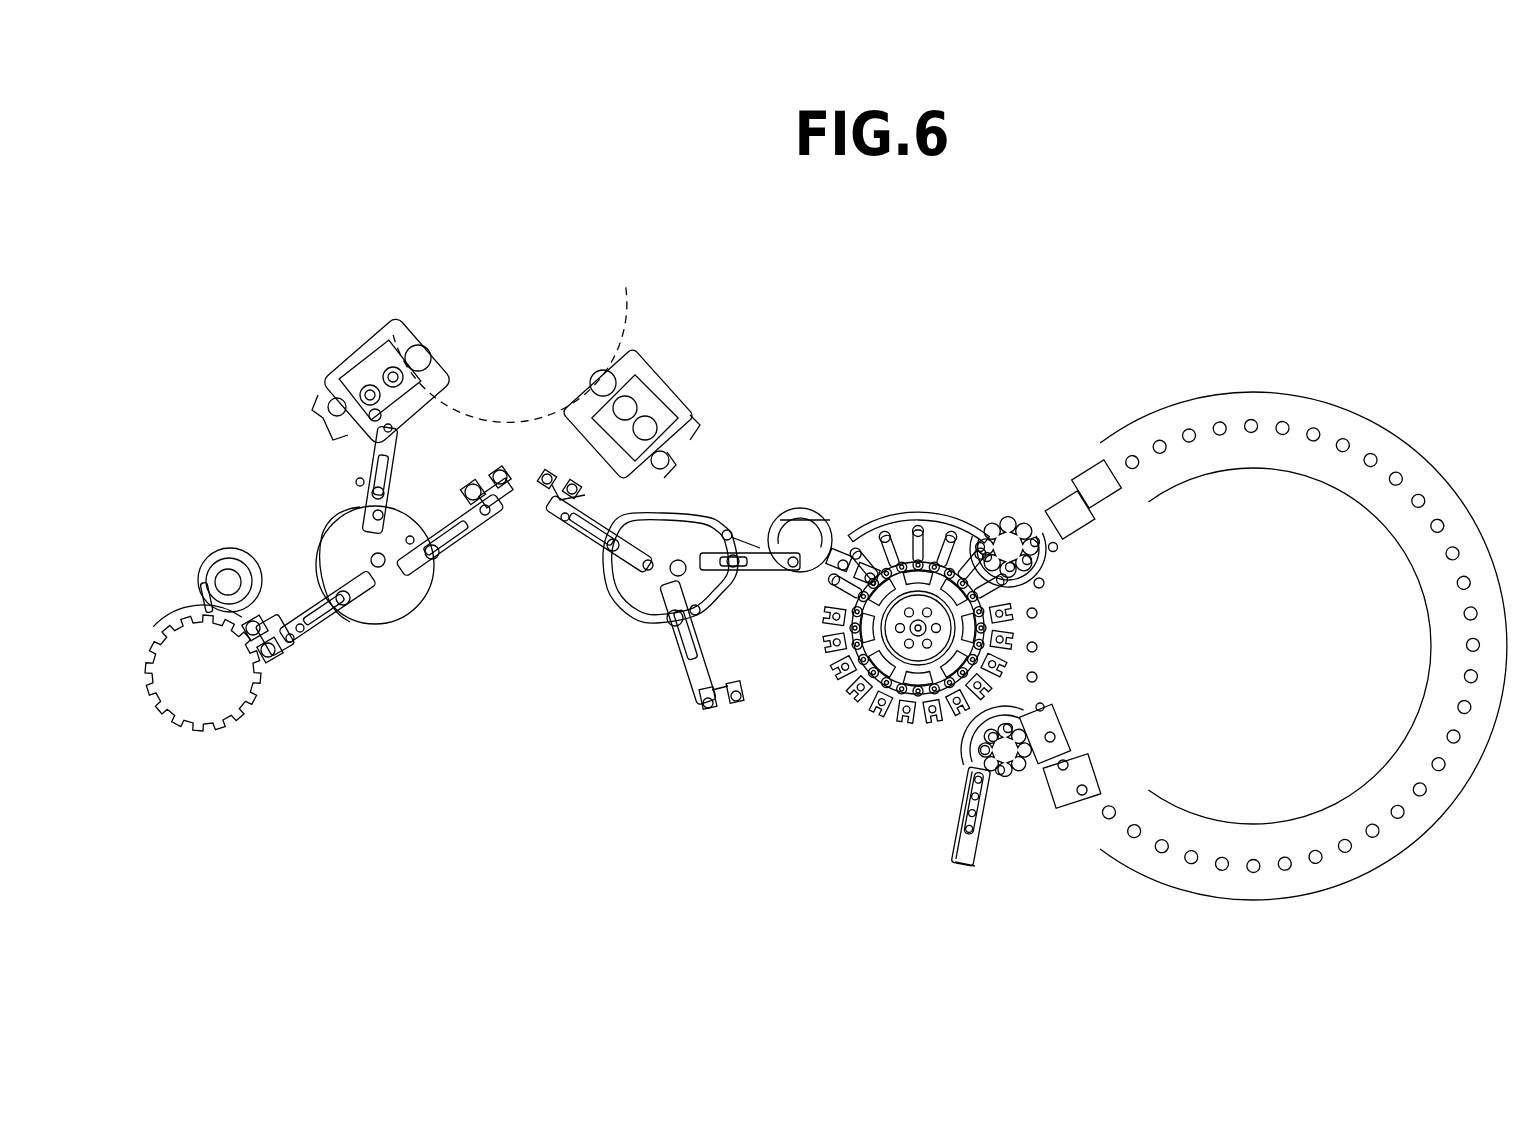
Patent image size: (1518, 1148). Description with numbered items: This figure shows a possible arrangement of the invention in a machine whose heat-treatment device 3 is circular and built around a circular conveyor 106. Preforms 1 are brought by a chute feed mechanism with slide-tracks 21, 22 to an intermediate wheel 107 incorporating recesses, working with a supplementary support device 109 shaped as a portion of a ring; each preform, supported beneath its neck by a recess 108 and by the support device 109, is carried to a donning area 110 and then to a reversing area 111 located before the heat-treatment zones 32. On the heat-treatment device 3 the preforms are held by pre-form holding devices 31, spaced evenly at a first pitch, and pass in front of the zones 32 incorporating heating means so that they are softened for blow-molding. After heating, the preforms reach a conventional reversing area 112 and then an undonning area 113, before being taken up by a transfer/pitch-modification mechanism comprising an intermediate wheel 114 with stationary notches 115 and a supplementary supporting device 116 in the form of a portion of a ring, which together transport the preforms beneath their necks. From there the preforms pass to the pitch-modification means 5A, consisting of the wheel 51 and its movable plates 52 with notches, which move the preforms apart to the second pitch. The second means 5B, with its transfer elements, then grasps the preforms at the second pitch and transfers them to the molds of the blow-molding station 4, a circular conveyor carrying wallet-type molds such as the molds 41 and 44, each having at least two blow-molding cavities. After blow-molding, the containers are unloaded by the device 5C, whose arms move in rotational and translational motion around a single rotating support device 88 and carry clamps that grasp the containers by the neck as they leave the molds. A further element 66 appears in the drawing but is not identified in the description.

The preform 1 is at (1058, 548).
The heat-treatment device 3 is at (1310, 382).
The blow-molding station 4 is at (690, 295).
The pitch-modification means 5A is at (805, 710).
The second means 5B is at (605, 650).
The unloading device 5C is at (392, 658).
The slide-track 21 is at (953, 828).
The slide-track 22 is at (973, 857).
The pre-form holding device 31 is at (1378, 838).
The heat-treatment zone 32 is at (1400, 462).
The wallet-type mold 41 is at (630, 363).
The wallet-type mold 44 is at (340, 372).
The wheel 51 is at (888, 700).
The movable plates 52 is at (860, 705).
The guide arc 66 is at (903, 512).
The support device 88 is at (338, 512).
The circular conveyor 106 is at (1336, 749).
The intermediate wheel 107 is at (1012, 757).
The recess 108 is at (1030, 783).
The supplementary support device 109 is at (1010, 712).
The donning area 110 is at (1043, 705).
The reversing area 111 is at (1087, 770).
The reversing area 112 is at (1107, 490).
The undonning area 113 is at (1077, 523).
The intermediate wheel 114 is at (990, 523).
The notches 115 is at (1013, 520).
The supplementary supporting device 116 is at (1043, 567).